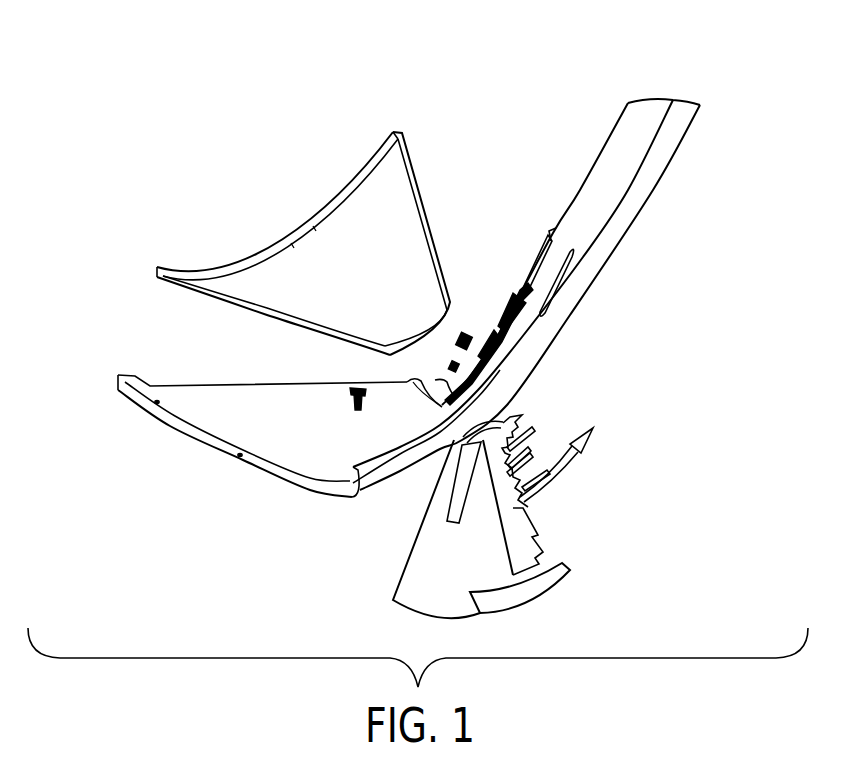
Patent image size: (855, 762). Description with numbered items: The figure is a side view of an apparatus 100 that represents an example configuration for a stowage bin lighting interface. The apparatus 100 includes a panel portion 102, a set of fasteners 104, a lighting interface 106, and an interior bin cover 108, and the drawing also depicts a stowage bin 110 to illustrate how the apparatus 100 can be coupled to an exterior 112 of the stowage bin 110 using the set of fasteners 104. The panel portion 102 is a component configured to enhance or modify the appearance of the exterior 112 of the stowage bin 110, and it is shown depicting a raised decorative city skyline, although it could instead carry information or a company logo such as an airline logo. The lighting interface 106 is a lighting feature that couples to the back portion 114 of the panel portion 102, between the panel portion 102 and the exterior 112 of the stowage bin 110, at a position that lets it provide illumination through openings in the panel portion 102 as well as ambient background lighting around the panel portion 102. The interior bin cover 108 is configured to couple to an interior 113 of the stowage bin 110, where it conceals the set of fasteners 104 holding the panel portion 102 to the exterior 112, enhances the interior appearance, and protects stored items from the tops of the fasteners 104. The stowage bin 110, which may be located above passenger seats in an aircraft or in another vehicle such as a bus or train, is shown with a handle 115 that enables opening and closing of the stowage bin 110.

The apparatus 100 is at (248, 181).
The panel portion 102 is at (552, 540).
The set of fasteners 104 is at (447, 350).
The lighting interface 106 is at (437, 498).
The interior bin cover 108 is at (431, 219).
The stowage bin 110 is at (526, 252).
The exterior 112 is at (592, 317).
The interior 113 is at (580, 158).
The back portion 114 is at (430, 571).
The handle 115 is at (578, 259).